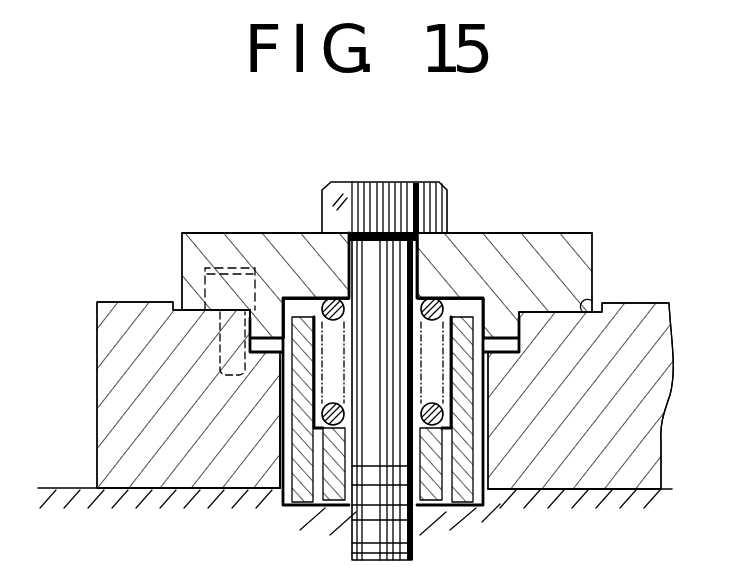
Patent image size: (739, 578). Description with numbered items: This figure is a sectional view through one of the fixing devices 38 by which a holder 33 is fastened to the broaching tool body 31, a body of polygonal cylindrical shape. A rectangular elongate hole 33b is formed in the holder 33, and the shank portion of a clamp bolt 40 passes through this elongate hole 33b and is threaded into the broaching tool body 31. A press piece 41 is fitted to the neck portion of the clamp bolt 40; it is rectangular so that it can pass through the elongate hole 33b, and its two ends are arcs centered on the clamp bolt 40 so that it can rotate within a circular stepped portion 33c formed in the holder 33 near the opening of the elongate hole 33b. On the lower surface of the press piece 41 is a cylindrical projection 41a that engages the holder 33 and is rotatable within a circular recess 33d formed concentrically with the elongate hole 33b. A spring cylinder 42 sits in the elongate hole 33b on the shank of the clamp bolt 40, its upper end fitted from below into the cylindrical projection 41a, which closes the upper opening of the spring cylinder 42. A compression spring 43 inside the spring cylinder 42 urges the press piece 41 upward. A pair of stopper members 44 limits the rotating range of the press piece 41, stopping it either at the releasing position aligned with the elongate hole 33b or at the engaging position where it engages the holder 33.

The broaching tool body 31 is at (75, 508).
The holder 33 is at (565, 477).
The elongate hole 33b is at (280, 446).
The circular stepped portion 33c is at (588, 300).
The circular recess 33d is at (250, 342).
The fixing device 38 is at (470, 222).
The clamp bolt 40 is at (392, 210).
The press piece 41 is at (215, 246).
The cylindrical projection 41a is at (268, 332).
The spring cylinder 42 is at (452, 478).
The compression spring 43 is at (325, 497).
The stopper member 44 is at (205, 276).